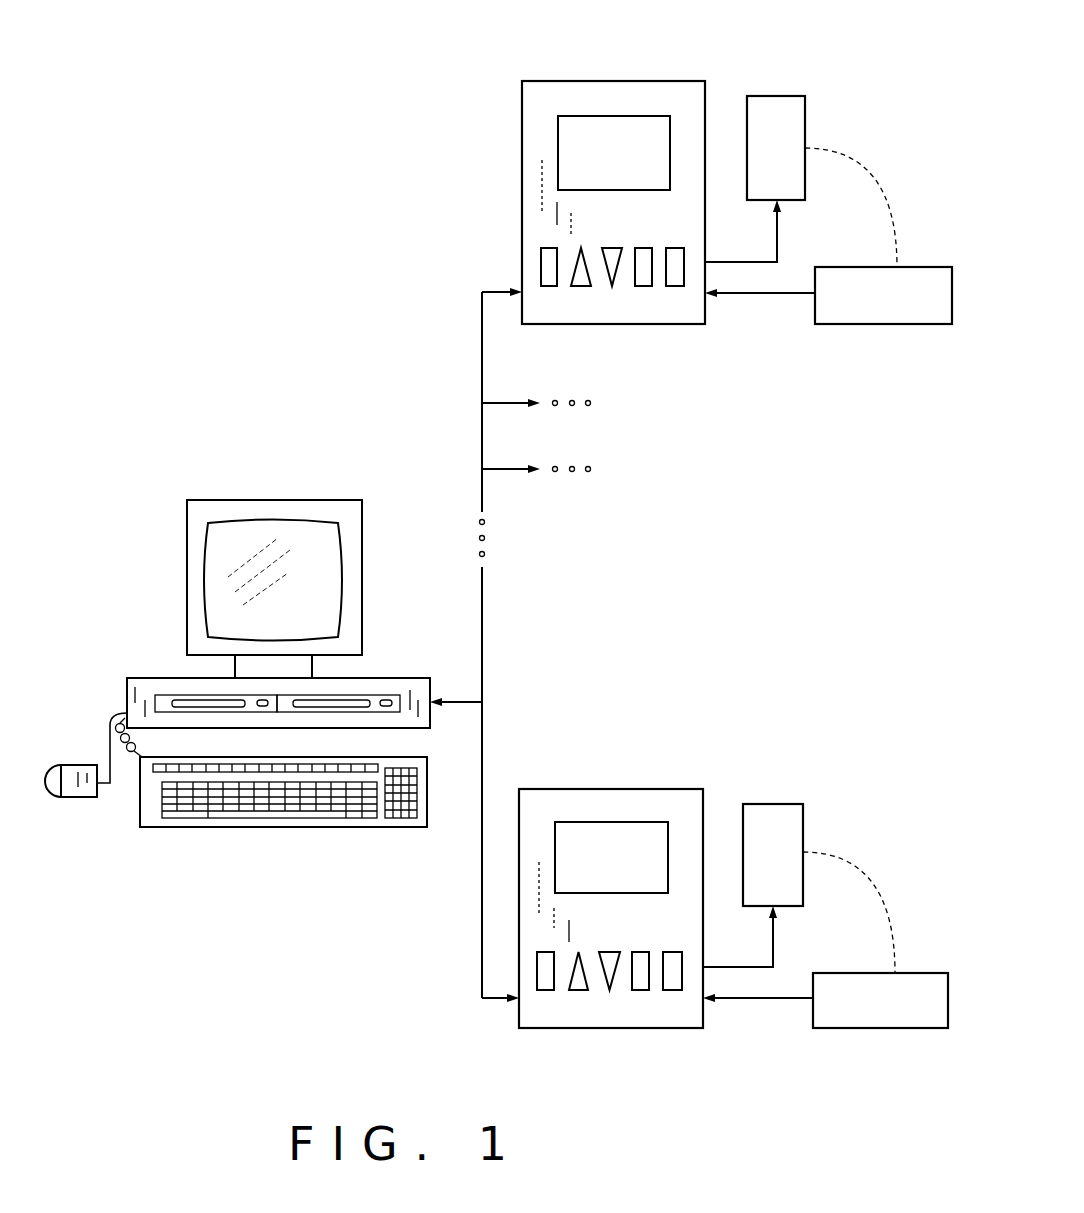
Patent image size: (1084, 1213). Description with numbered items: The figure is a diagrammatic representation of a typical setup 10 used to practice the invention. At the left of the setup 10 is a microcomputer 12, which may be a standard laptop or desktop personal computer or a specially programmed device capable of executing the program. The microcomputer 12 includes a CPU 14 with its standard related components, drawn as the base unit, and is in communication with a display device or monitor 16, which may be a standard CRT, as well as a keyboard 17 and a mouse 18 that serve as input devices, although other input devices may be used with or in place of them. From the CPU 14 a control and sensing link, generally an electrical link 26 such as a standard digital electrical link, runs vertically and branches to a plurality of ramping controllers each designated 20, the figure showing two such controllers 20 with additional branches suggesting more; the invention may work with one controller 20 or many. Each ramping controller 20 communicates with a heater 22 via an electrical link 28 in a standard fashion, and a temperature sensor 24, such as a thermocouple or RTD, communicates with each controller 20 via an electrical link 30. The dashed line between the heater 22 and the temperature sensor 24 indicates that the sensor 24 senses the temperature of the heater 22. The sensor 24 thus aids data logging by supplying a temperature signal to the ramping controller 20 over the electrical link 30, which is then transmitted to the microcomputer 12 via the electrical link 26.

The setup 10 is at (312, 338).
The microcomputer 12 is at (156, 618).
The CPU 14 is at (127, 684).
The display device or monitor 16 is at (233, 510).
The keyboard 17 is at (150, 815).
The mouse 18 is at (73, 797).
The ramping controller 20 is at (587, 93).
The heater 22 is at (770, 112).
The temperature sensor 24 is at (857, 312).
The electrical link 26 is at (482, 625).
The electrical link 28 is at (735, 260).
The electrical link 30 is at (747, 295).